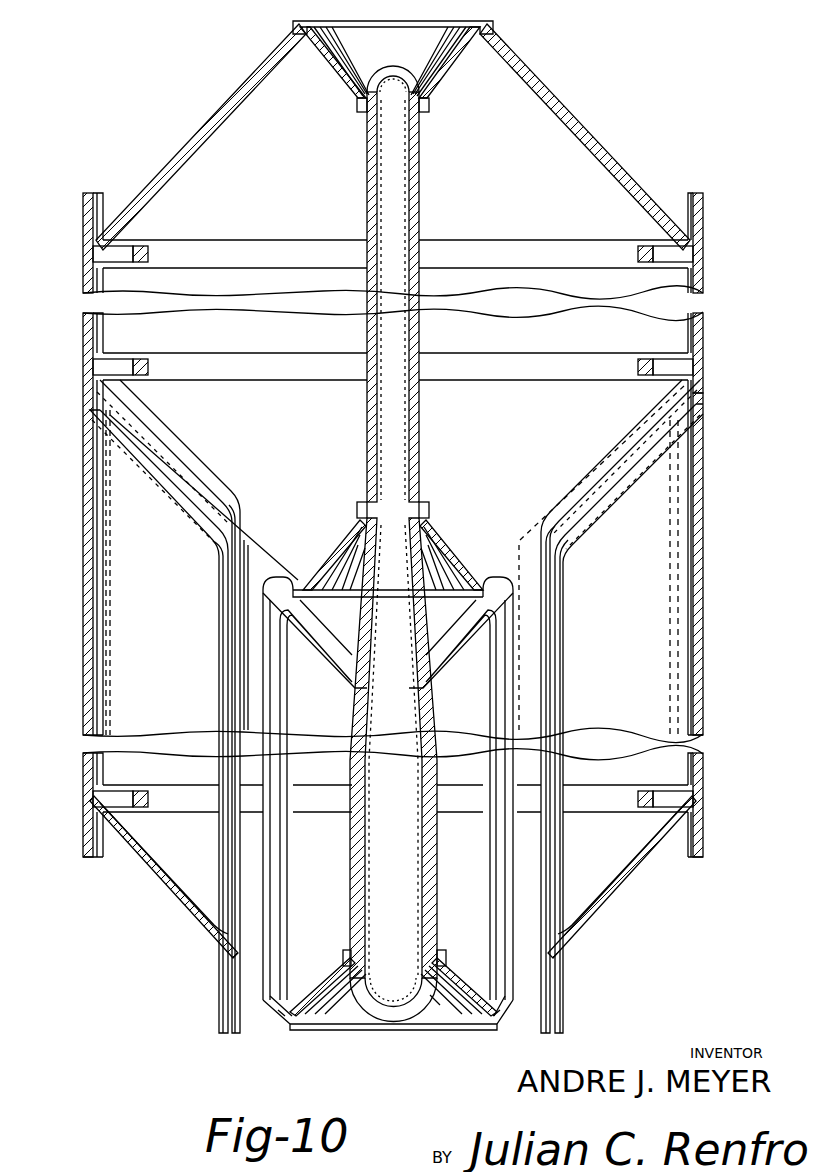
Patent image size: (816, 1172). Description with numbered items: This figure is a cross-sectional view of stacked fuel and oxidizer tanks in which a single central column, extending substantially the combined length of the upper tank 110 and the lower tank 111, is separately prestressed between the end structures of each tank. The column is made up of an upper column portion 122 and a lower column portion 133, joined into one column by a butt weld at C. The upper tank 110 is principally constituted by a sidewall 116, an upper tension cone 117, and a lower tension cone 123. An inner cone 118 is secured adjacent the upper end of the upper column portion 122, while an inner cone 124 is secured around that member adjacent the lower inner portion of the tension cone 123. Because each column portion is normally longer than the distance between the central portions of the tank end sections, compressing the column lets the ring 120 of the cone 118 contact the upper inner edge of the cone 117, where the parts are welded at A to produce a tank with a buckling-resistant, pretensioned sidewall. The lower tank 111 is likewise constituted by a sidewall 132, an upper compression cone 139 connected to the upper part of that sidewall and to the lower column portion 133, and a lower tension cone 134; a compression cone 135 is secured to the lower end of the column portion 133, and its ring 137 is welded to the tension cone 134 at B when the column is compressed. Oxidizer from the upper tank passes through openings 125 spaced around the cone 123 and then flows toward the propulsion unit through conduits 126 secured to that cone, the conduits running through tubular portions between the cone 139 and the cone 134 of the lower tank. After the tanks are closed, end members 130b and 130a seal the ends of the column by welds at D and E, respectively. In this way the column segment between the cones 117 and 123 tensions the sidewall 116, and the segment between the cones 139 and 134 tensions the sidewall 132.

The upper tank 110 is at (83, 289).
The lower tank 111 is at (83, 600).
The sidewall 116 is at (703, 334).
The upper tension cone 117 is at (585, 126).
The inner cone 118 is at (455, 65).
The ring 120 is at (493, 27).
The upper column portion 122 is at (421, 191).
The lower tension cone 123 is at (190, 466).
The inner cone 124 is at (455, 556).
The openings 125 is at (250, 552).
The conduits 126 is at (232, 995).
The end member 130a is at (393, 66).
The end member 130b is at (378, 1018).
The sidewall 132 is at (703, 666).
The lower column portion 133 is at (437, 872).
The lower tension cone 134 is at (632, 876).
The compression cone 135 is at (322, 990).
The ring 137 is at (297, 1028).
The upper compression cone 139 is at (618, 484).
The weld location A is at (288, 40).
The weld location B is at (283, 1018).
The butt weld C is at (345, 548).
The weld location D is at (432, 1002).
The weld location E is at (362, 88).